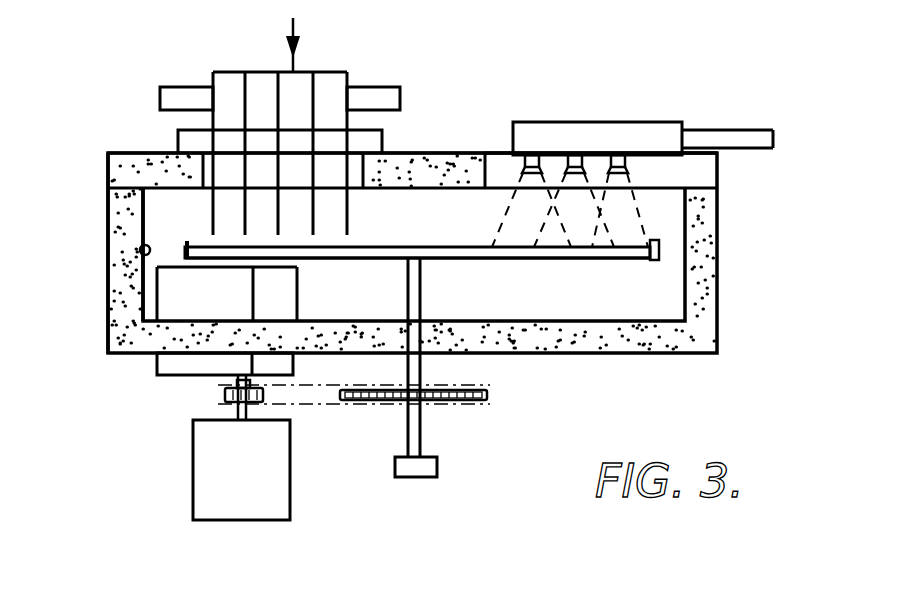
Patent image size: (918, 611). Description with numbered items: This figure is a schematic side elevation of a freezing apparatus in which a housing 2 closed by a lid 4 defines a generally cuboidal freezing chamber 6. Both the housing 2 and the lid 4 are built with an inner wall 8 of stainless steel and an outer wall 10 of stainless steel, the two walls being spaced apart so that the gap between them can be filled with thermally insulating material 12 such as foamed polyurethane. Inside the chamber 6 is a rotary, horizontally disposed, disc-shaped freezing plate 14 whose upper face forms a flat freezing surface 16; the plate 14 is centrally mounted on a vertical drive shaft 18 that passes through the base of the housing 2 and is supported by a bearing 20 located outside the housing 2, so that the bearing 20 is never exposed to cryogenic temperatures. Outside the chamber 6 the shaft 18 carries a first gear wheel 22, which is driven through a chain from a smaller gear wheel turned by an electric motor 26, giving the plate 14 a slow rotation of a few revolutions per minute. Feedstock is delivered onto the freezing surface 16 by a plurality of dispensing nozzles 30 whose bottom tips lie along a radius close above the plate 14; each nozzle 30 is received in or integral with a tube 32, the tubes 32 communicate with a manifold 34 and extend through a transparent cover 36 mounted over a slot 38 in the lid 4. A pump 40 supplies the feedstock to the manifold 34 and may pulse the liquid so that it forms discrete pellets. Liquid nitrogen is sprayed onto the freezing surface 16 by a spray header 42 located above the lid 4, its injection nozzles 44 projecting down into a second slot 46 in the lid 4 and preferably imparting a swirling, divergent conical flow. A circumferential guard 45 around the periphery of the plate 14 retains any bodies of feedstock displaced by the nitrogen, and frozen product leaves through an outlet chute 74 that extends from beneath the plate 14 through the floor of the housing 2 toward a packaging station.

The housing 2 is at (724, 274).
The lid 4 is at (726, 181).
The freezing chamber 6 is at (644, 293).
The inner wall 8 is at (140, 250).
The outer wall 10 is at (107, 278).
The thermally insulating material 12 is at (121, 302).
The freezing plate 14 is at (560, 268).
The freezing surface 16 is at (400, 247).
The drive shaft 18 is at (410, 433).
The bearing 20 is at (403, 467).
The first gear wheel 22 is at (487, 394).
The electric motor 26 is at (212, 447).
The dispensing nozzles 30 is at (213, 232).
The tube 32 is at (200, 175).
The manifold 34 is at (235, 72).
The cover 36 is at (177, 135).
The slot 38 is at (329, 170).
The pump 40 is at (386, 91).
The spray header 42 is at (667, 98).
The injection nozzles 44 is at (615, 155).
The circumferential guard 45 is at (659, 246).
The slot 46 is at (500, 163).
The outlet chute 74 is at (168, 372).